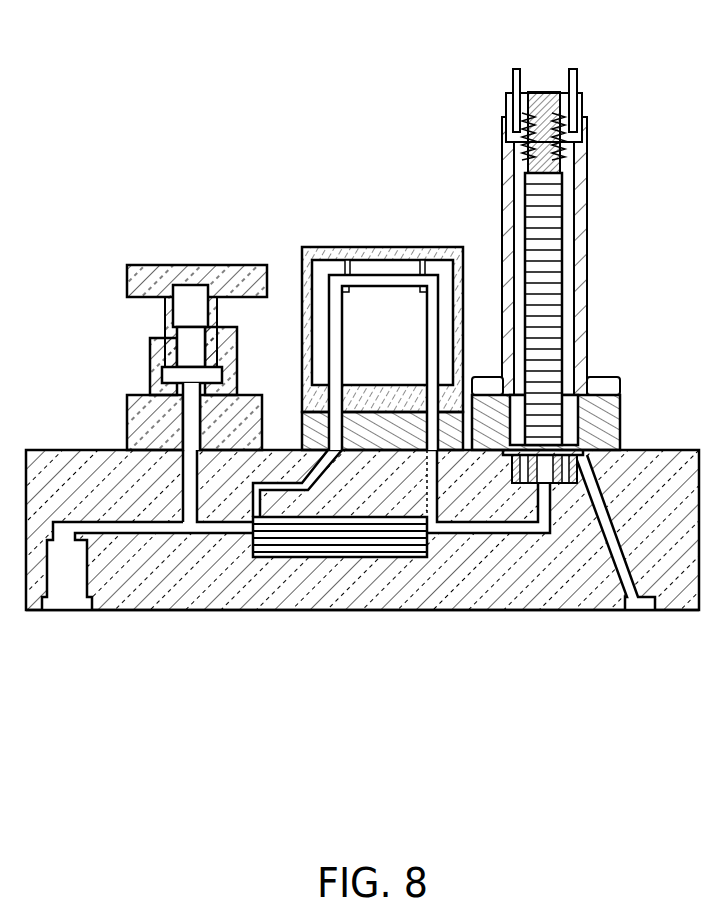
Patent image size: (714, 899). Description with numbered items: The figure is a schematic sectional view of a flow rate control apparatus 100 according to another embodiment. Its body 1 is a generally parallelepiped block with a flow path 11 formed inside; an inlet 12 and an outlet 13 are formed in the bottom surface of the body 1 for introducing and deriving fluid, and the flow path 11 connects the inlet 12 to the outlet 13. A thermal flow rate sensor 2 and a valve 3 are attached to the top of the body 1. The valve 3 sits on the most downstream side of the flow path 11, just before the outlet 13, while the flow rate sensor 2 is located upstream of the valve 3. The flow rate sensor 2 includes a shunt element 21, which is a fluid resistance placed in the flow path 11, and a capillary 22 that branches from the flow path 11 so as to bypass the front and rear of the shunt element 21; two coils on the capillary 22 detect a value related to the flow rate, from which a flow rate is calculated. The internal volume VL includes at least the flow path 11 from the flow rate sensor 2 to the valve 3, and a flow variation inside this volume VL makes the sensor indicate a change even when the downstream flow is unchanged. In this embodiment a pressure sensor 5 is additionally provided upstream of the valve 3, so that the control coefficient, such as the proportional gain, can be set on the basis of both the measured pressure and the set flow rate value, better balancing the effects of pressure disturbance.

The flow rate control apparatus 100 is at (152, 61).
The body 1 is at (372, 648).
The thermal flow rate sensor 2 is at (383, 232).
The valve 3 is at (598, 86).
The pressure sensor 5 is at (196, 265).
The flow path 11 is at (163, 533).
The inlet 12 is at (65, 612).
The outlet 13 is at (640, 612).
The shunt element 21 is at (320, 557).
The capillary 22 is at (372, 275).
The internal volume VL is at (437, 560).